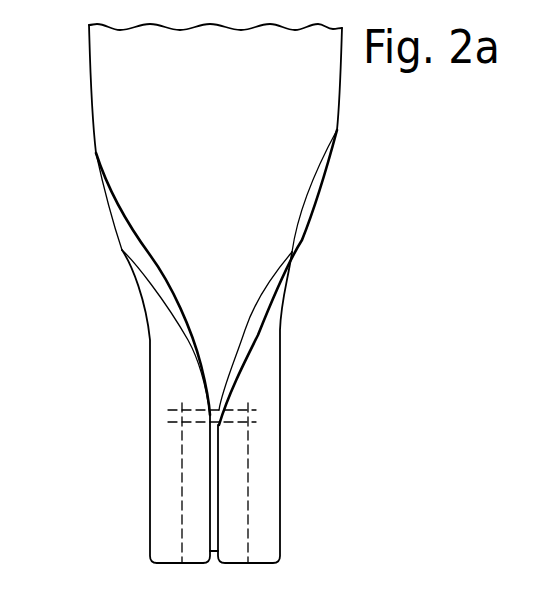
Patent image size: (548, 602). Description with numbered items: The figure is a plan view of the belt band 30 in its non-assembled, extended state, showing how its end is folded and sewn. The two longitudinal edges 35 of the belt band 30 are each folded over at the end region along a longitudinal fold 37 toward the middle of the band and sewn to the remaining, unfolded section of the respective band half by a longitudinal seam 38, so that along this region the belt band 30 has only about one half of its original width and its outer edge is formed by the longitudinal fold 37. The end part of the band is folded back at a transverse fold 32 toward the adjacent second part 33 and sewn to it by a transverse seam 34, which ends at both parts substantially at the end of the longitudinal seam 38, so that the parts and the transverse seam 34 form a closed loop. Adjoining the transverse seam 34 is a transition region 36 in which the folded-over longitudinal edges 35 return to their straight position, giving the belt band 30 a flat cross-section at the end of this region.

The belt band 30 is at (345, 143).
The transverse fold 32 is at (181, 566).
The second part 33 is at (280, 489).
The transverse seam 34 is at (249, 422).
The longitudinal edges 35 is at (89, 88).
The transition region 36 is at (122, 230).
The longitudinal fold 37 is at (150, 391).
The longitudinal seam 38 is at (181, 506).